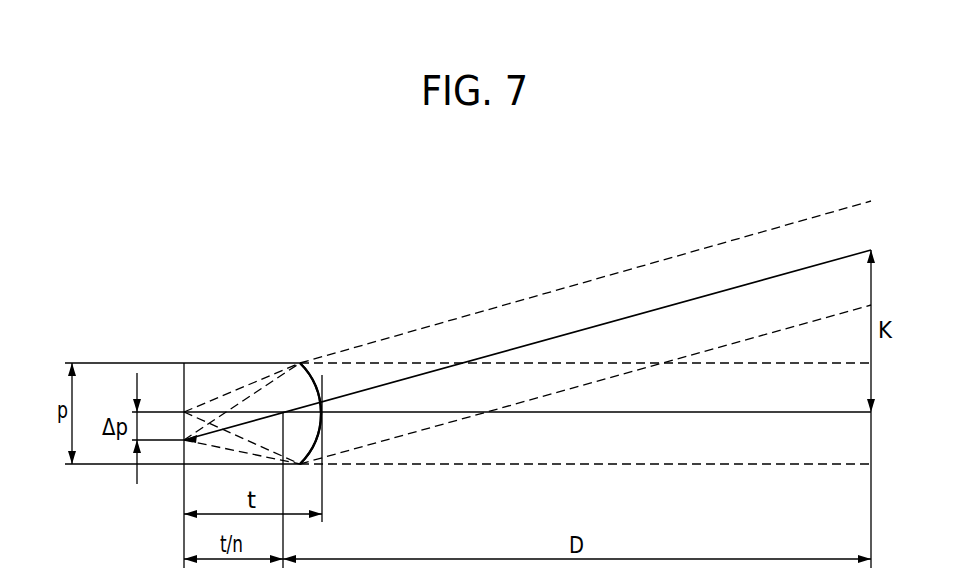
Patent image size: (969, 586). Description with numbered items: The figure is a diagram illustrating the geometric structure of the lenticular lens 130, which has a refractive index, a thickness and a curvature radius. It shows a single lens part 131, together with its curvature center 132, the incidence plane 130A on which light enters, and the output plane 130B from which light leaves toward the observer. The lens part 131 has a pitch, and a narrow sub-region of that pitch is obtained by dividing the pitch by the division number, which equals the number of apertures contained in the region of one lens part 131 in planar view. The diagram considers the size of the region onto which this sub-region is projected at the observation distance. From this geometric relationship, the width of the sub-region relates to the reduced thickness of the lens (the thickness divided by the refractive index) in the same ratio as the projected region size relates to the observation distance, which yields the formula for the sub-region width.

The lenticular lens 130 is at (332, 385).
The lens part 131 is at (295, 376).
The incidence plane 130A is at (183, 393).
The output plane 130B is at (318, 383).
The curvature center 132 is at (282, 412).